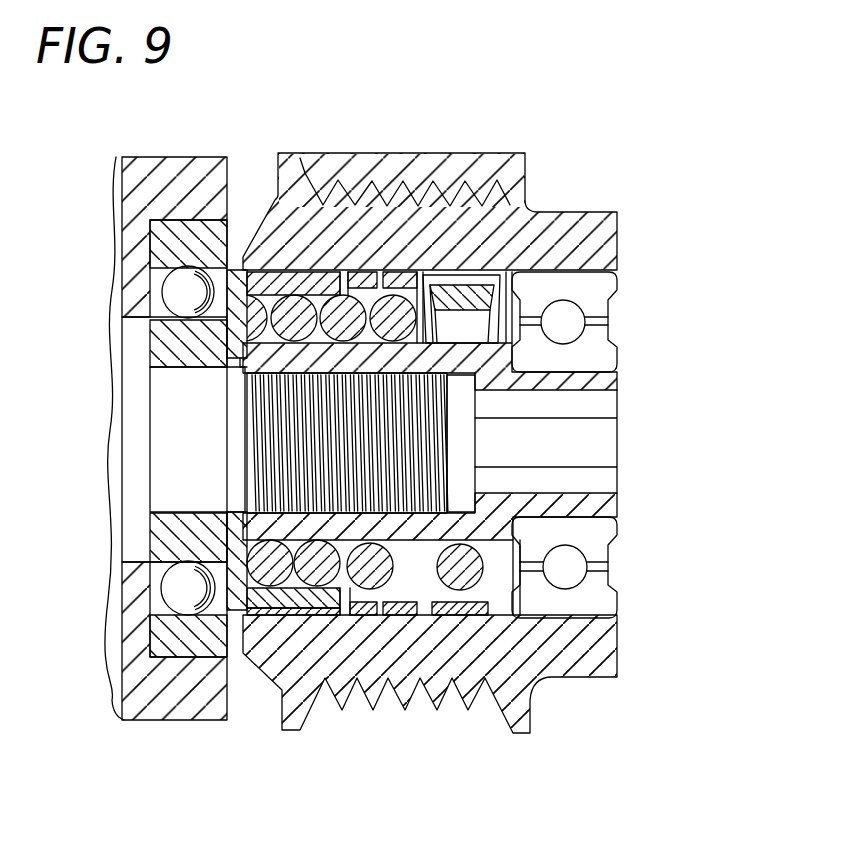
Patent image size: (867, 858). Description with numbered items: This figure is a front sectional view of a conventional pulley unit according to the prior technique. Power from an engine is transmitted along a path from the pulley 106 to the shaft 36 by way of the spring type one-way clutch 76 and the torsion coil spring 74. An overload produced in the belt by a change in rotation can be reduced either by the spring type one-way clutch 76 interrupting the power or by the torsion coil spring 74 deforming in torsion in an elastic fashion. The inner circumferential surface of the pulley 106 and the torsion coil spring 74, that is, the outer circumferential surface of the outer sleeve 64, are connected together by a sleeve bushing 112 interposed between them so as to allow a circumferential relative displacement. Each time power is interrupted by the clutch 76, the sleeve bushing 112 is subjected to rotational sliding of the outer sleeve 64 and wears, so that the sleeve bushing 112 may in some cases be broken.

The shaft 36 is at (245, 448).
The outer sleeve 64 is at (252, 283).
The torsion coil spring 74 is at (320, 300).
The spring type one-way clutch 76 is at (393, 273).
The pulley 106 is at (293, 207).
The sleeve bushing 112 is at (250, 283).